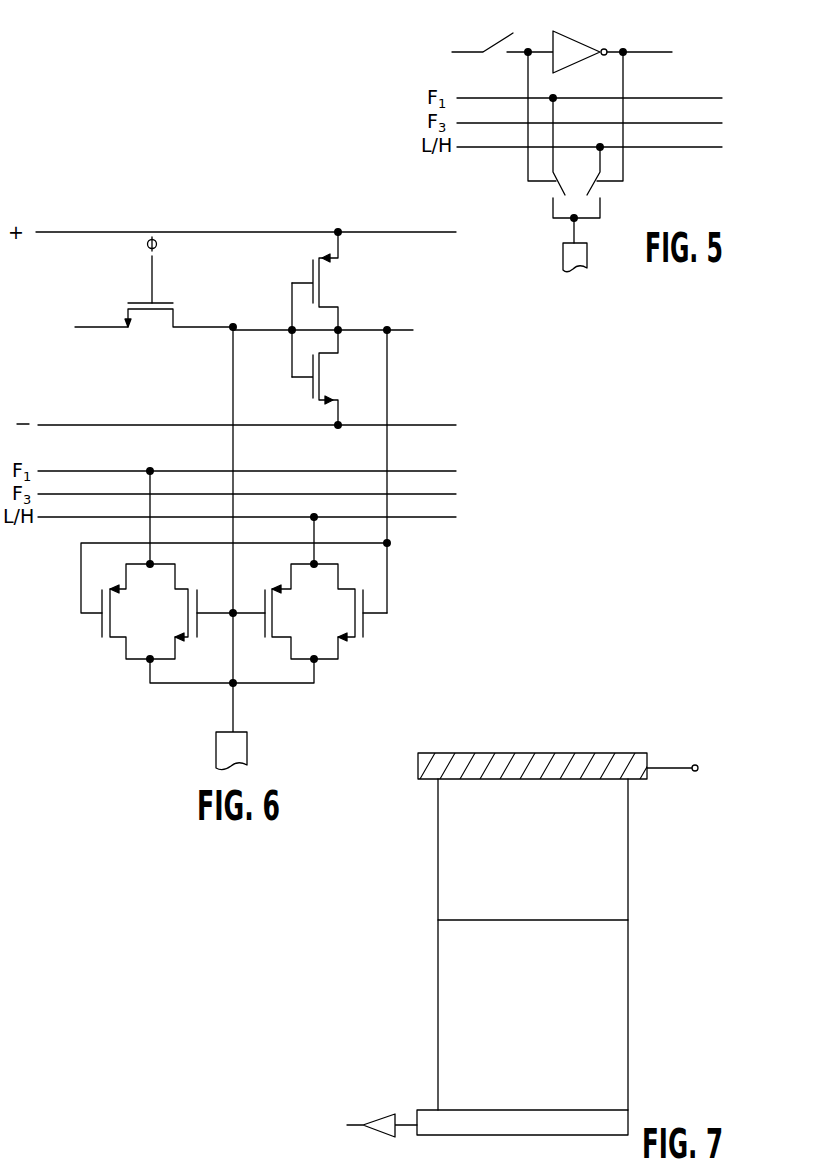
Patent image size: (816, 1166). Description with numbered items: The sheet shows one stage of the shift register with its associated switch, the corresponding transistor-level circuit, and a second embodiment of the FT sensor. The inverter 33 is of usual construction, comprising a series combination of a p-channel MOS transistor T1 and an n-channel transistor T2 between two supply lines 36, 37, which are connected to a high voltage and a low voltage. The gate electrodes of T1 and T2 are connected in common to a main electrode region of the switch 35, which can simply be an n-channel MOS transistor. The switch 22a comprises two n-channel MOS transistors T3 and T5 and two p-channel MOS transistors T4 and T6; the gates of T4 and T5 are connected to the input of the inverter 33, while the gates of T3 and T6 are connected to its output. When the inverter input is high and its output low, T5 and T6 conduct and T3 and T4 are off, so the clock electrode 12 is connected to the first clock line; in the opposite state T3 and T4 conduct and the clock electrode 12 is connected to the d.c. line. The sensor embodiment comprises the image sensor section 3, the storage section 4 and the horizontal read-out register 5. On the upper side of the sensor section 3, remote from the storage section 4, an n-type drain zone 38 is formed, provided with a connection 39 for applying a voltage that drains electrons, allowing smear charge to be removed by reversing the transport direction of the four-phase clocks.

In FIG. 5, the inverter 33 is at (571, 43).
In FIG. 6, the inverter 33 is at (341, 329).
In FIG. 5, the switch 22a is at (553, 203).
In FIG. 6, the switch 22a is at (257, 614).
In FIG. 5, the clock electrode 12 is at (566, 258).
In FIG. 6, the clock electrode 12 is at (222, 745).
In FIG. 6, the switch 35 is at (148, 314).
In FIG. 6, the supply line 36 is at (420, 229).
In FIG. 6, the supply line 37 is at (443, 423).
In FIG. 6, the p-channel MOS transistor T1 is at (325, 279).
In FIG. 6, the n-channel transistor T2 is at (325, 375).
In FIG. 6, the n-channel MOS transistor T3 is at (352, 616).
In FIG. 6, the p-channel MOS transistor T4 is at (278, 609).
In FIG. 6, the n-channel MOS transistor T5 is at (186, 614).
In FIG. 6, the p-channel MOS transistor T6 is at (114, 609).
In FIG. 7, the n-type drain zone 38 is at (562, 753).
In FIG. 7, the connection 39 is at (686, 748).
In FIG. 7, the image sensor section 3 is at (614, 889).
In FIG. 7, the storage section 4 is at (618, 1075).
In FIG. 7, the horizontal read-out register 5 is at (580, 1124).